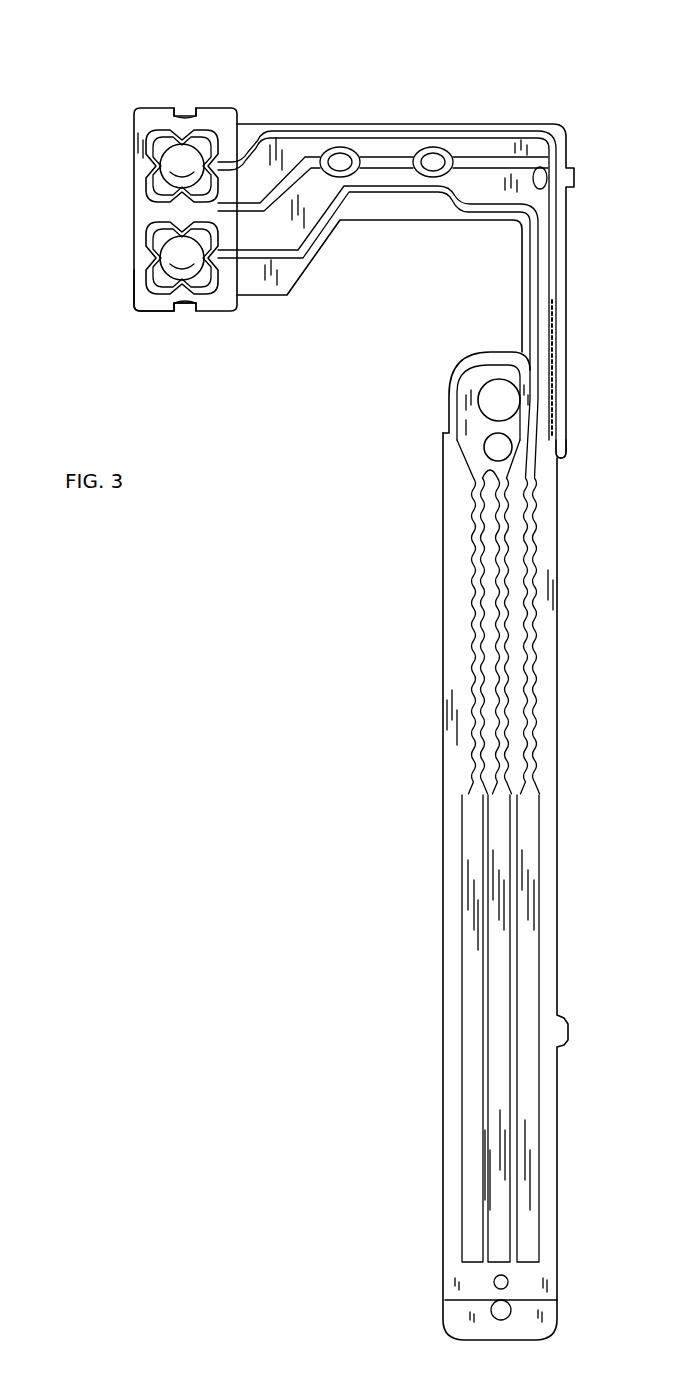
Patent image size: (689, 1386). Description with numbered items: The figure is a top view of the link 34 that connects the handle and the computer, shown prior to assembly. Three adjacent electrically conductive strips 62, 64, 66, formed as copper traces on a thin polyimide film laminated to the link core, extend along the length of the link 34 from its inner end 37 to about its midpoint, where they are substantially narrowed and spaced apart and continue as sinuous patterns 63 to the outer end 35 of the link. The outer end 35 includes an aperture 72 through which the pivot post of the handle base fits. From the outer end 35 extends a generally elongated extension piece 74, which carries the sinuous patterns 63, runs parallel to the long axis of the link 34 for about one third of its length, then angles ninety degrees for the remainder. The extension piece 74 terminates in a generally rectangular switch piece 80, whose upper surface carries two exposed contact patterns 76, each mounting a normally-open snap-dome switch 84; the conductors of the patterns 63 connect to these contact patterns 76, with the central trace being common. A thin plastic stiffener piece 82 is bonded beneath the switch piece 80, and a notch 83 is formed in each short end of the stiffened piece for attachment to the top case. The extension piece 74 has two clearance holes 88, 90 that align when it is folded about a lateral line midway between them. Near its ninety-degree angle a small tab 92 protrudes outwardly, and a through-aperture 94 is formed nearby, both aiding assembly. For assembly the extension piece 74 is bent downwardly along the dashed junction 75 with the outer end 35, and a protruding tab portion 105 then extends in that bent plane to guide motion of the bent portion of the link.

The link 34 is at (398, 660).
The outer end of the link 35 is at (465, 360).
The inner end of the link 37 is at (458, 1345).
The electrically conductive strip 62 is at (527, 997).
The sinuous patterns 63 is at (525, 135).
The electrically conductive strip 64 is at (496, 1060).
The electrically conductive strip 66 is at (471, 1160).
The aperture 72 is at (499, 398).
The extension piece 74 is at (532, 267).
The junction 75 is at (540, 408).
The contact patterns 76 is at (193, 130).
The switch piece 80 is at (148, 210).
The stiffener piece 82 is at (140, 300).
The notch 83 is at (183, 105).
The snap-dome switch 84 is at (158, 135).
The clearance hole 88 is at (437, 155).
The clearance hole 90 is at (338, 155).
The tab 92 is at (574, 177).
The through-aperture 94 is at (540, 178).
The protruding tab portion 105 is at (567, 440).